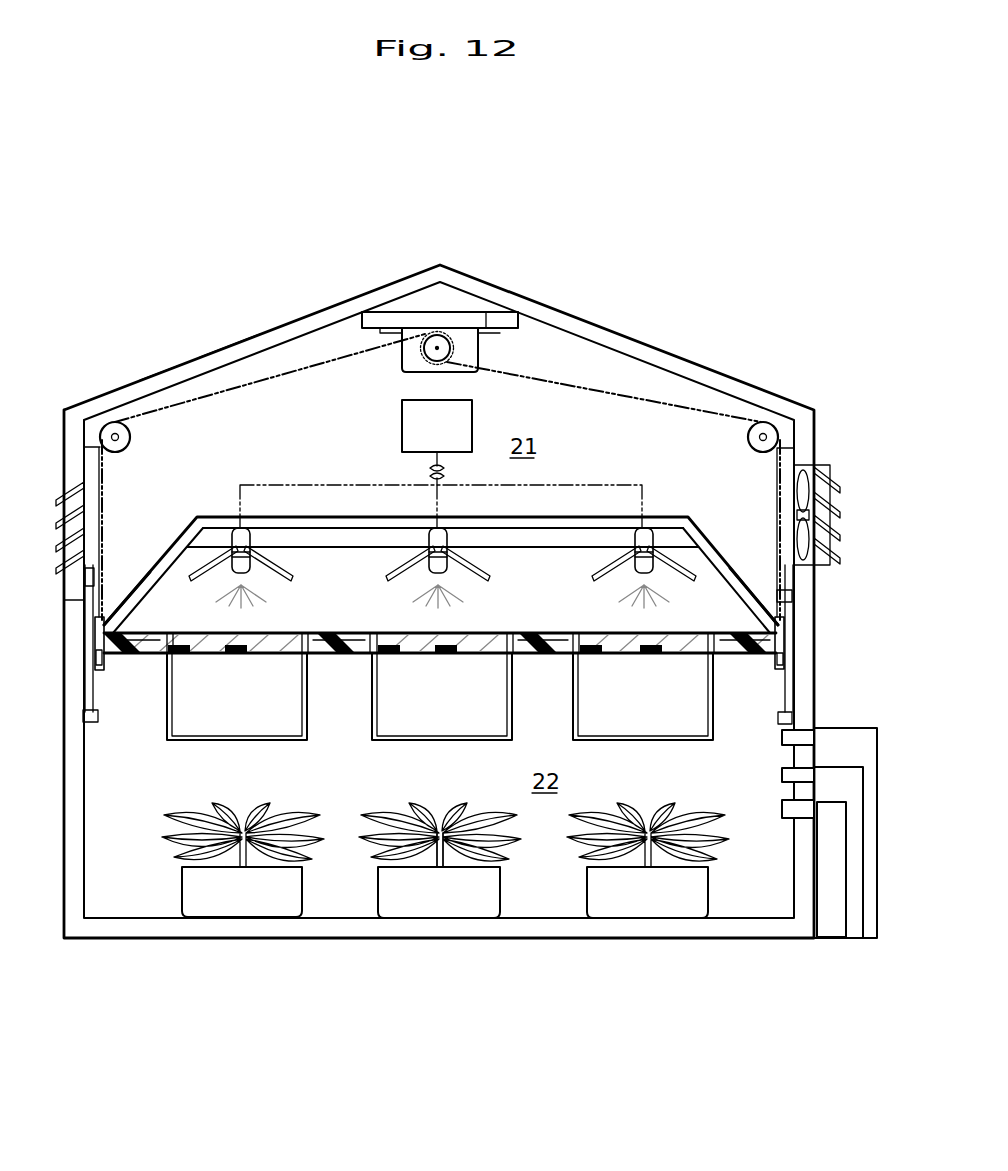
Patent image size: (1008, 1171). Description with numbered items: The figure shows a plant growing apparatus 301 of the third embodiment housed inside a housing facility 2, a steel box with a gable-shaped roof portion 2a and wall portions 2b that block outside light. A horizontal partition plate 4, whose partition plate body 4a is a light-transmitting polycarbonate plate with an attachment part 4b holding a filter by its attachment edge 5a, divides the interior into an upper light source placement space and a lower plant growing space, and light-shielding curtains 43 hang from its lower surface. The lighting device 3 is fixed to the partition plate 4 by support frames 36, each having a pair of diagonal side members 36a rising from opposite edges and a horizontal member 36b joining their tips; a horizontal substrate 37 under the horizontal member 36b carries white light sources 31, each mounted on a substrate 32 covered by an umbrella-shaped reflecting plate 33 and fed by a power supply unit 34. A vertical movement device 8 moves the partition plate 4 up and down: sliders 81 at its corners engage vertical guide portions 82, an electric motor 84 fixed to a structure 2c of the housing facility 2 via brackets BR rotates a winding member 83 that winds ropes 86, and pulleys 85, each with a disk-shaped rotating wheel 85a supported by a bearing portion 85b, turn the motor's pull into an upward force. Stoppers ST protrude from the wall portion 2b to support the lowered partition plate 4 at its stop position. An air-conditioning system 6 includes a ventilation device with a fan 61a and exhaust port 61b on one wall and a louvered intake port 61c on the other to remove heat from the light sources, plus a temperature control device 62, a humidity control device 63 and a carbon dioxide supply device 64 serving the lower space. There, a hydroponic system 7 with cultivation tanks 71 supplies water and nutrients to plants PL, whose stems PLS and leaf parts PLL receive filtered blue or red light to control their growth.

The plant growing apparatus 301 is at (226, 216).
The housing facility 2 is at (131, 380).
The roof portion 2a is at (232, 352).
The wall portion 2b is at (74, 606).
The structure 2c is at (413, 320).
The vertical movement device 8 is at (455, 322).
The brackets BR is at (503, 323).
The winding member 83 is at (422, 357).
The electric motor 84 is at (466, 349).
The pulley 85 is at (133, 437).
The disk-shaped rotating wheel 85a is at (90, 431).
The bearing portion 85b is at (78, 428).
The rope 86 is at (103, 486).
The fan 61a is at (828, 508).
The exhaust port 61b is at (806, 472).
The intake port 61c is at (62, 494).
The power supply unit 34 is at (402, 437).
The horizontal substrate 37 is at (289, 530).
The support frame 36 is at (547, 520).
The diagonal side members 36a is at (140, 592).
The horizontal member 36b is at (655, 524).
The lighting device 3 is at (239, 520).
The substrate 32 is at (240, 549).
The reflecting plate 33 is at (216, 562).
The white light source 31 is at (284, 572).
The partition plate 4 is at (440, 618).
The partition plate body 4a is at (309, 633).
The attachment part 4b is at (378, 633).
The attachment edge 5a is at (513, 633).
The light-shielding curtains 43 is at (372, 704).
The sliders 81 is at (99, 655).
The vertical guide portions 82 is at (93, 683).
The stoppers ST is at (88, 580).
The air-conditioning system 6 is at (843, 693).
The carbon dioxide supply device 64 is at (848, 734).
The humidity control device 63 is at (852, 792).
The temperature control device 62 is at (845, 844).
The hydroponic system 7 is at (455, 915).
The cultivation tank 71 is at (192, 898).
The plants to be grown PL is at (177, 830).
The leaf parts PLL is at (393, 803).
The stems PLS is at (441, 822).